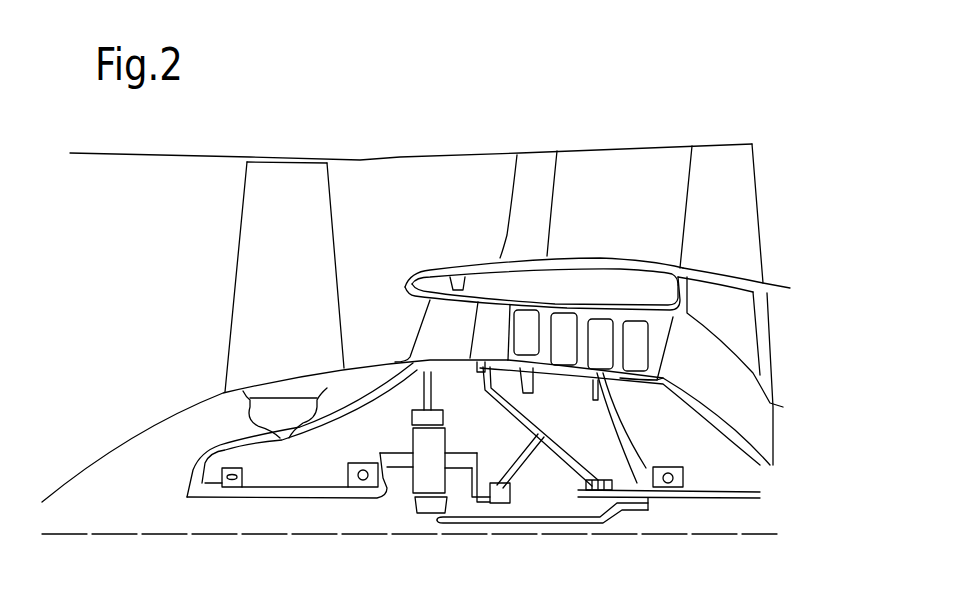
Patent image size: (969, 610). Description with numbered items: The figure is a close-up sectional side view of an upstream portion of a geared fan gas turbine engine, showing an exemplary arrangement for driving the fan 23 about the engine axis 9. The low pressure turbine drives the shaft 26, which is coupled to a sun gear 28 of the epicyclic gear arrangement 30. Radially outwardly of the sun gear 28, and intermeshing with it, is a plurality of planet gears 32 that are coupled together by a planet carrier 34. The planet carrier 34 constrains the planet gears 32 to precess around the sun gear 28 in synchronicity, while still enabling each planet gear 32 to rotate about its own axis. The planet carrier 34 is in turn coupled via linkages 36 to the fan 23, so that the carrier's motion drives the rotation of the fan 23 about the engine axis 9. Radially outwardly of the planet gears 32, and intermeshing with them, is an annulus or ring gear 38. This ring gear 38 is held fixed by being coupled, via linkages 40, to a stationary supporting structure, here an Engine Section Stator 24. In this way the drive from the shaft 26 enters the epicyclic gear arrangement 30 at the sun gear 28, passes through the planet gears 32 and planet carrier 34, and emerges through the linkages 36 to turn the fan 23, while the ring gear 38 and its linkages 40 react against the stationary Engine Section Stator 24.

The engine axis 9 is at (197, 537).
The fan 23 is at (258, 311).
The Engine Section Stator 24 is at (443, 328).
The shaft 26 is at (663, 498).
The sun gear 28 is at (427, 513).
The epicyclic gear arrangement 30 is at (391, 492).
The planet gears 32 is at (420, 479).
The planet carrier 34 is at (468, 483).
The linkages 36 is at (371, 488).
The ring gear 38 is at (412, 418).
The linkages 40 is at (436, 383).